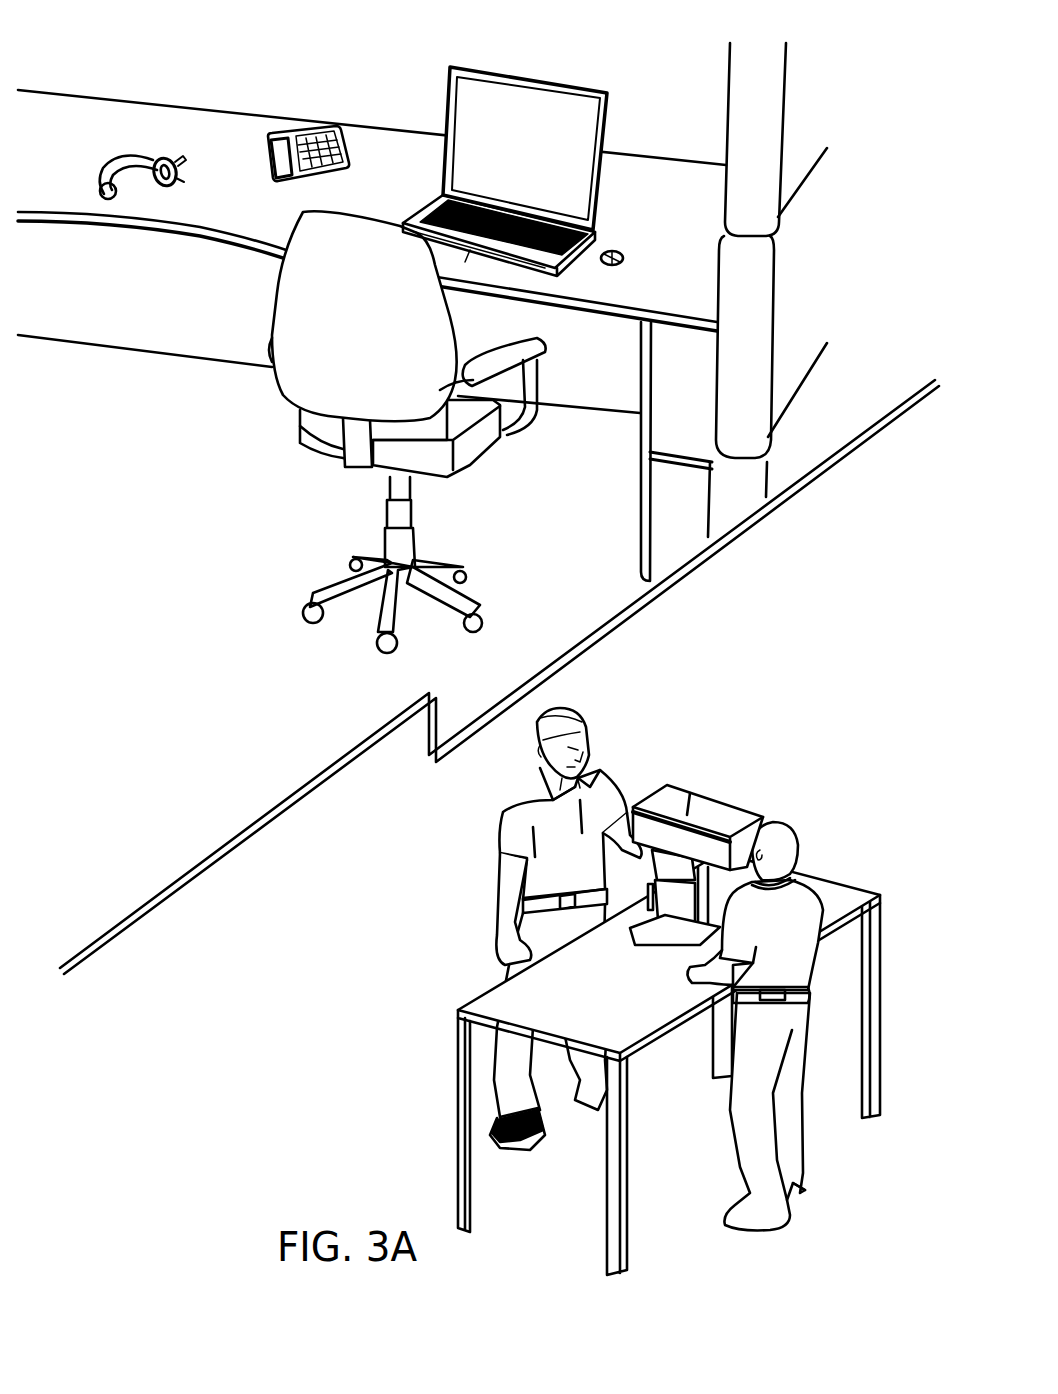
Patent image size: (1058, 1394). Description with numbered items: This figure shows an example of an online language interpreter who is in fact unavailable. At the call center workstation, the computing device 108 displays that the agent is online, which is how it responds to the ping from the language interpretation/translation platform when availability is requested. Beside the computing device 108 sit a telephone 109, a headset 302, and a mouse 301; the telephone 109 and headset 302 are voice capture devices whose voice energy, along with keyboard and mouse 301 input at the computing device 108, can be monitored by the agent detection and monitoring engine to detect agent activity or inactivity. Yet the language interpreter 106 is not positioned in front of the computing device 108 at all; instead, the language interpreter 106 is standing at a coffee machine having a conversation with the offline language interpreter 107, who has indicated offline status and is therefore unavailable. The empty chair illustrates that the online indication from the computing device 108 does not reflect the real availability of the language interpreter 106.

The language interpreter 106 is at (575, 715).
The offline language interpreter 107 is at (783, 843).
The computing device 108 is at (565, 80).
The telephone 109 is at (314, 130).
The mouse 301 is at (614, 251).
The headset 302 is at (173, 158).